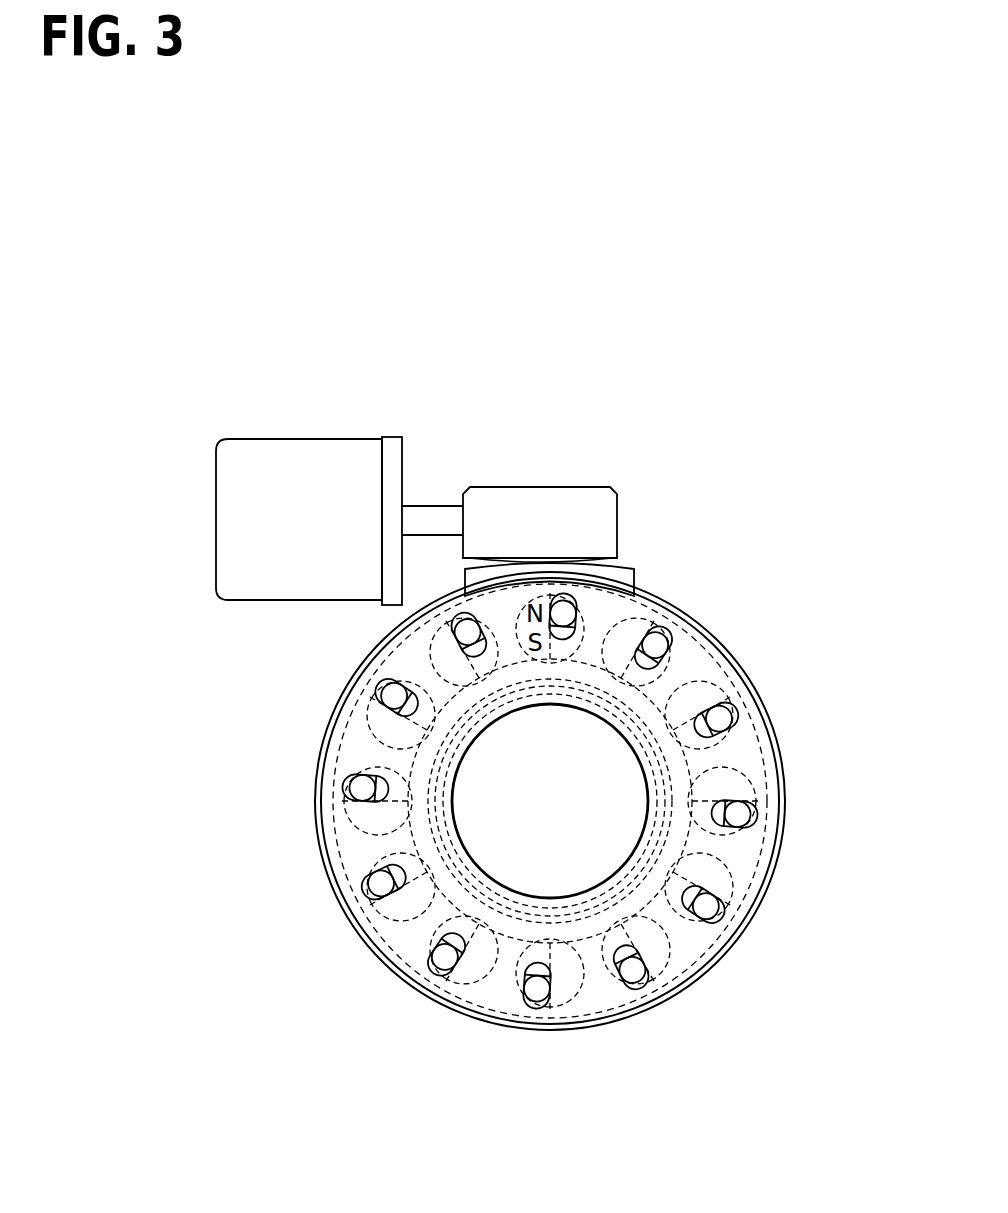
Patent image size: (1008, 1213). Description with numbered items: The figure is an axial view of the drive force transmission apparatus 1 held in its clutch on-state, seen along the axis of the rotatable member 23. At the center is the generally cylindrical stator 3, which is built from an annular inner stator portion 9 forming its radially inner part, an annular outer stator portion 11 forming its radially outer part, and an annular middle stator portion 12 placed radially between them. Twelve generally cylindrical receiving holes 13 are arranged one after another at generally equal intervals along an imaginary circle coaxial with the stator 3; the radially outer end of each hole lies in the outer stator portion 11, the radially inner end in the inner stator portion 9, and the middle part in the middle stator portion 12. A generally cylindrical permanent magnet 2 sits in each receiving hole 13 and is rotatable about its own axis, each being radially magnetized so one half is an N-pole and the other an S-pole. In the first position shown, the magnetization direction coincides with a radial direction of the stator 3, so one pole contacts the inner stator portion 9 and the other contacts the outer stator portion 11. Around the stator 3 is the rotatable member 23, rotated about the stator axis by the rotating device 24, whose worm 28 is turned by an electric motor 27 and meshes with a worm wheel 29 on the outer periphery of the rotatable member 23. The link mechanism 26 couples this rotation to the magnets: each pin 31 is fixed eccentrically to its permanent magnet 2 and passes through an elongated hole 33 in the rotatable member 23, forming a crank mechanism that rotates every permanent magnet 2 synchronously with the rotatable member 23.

The drive force transmission apparatus 1 is at (427, 1055).
The permanent magnet 2 is at (670, 602).
The stator 3 is at (750, 742).
The inner stator portion 9 is at (745, 900).
The outer stator portion 11 is at (740, 842).
The middle stator portion 12 is at (715, 873).
The receiving hole 13 is at (700, 675).
The rotatable member 23 is at (728, 948).
The rotating device 24 is at (647, 447).
The link mechanism 26 is at (268, 688).
The electric motor 27 is at (250, 458).
The worm 28 is at (550, 493).
The worm wheel 29 is at (620, 580).
The pin 31 is at (382, 694).
The elongated hole 33 is at (382, 713).